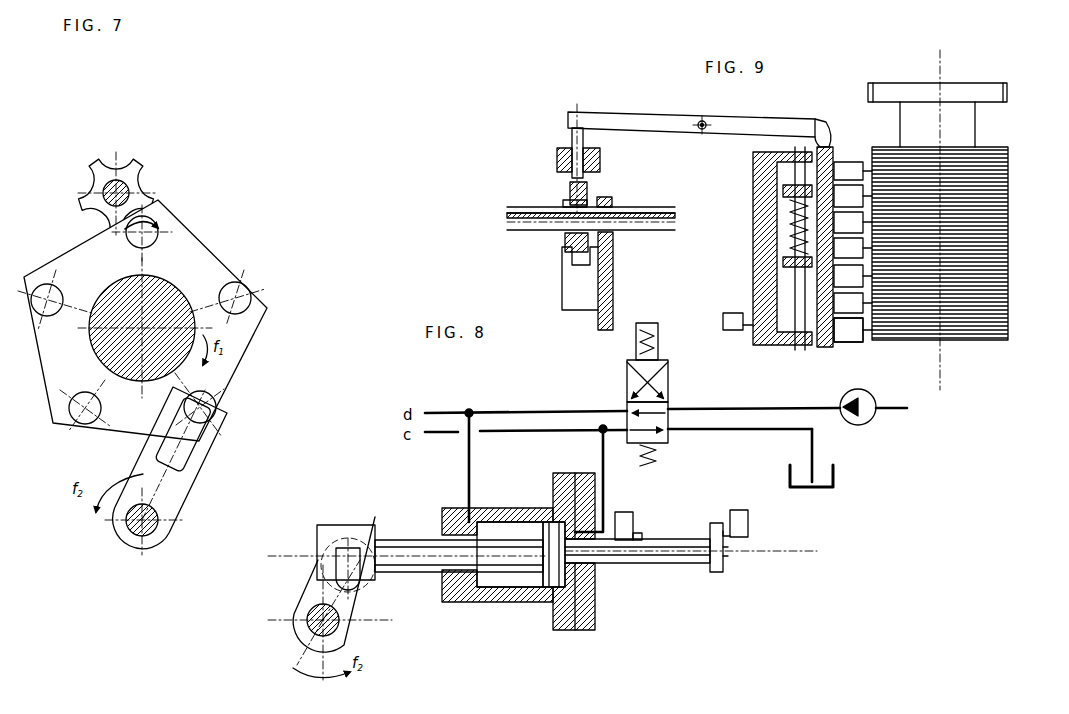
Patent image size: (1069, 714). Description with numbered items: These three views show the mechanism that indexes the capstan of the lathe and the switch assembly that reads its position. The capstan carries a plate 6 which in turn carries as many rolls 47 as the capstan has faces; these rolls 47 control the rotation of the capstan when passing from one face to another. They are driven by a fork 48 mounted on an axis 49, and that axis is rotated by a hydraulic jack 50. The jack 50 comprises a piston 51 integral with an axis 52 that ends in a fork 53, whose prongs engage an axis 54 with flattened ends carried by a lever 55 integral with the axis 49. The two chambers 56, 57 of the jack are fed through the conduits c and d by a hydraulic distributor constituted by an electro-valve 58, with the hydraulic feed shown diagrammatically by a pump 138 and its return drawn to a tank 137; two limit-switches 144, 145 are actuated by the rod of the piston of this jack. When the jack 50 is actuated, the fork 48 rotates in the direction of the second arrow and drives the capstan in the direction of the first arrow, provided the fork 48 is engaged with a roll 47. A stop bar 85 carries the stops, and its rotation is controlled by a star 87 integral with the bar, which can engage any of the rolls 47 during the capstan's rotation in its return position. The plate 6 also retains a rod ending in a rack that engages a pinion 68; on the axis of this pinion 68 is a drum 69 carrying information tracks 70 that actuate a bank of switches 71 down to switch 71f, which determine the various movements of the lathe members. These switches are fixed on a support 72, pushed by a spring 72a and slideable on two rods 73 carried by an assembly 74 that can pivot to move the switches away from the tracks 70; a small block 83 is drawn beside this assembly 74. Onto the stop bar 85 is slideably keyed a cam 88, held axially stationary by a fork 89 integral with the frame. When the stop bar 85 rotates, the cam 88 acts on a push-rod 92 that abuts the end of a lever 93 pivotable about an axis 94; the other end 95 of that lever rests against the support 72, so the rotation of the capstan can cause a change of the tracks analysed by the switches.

In FIG. 7, the plate 6 is at (192, 226).
In FIG. 7, the rolls 47 is at (156, 218).
In FIG. 7, the fork 48 is at (208, 455).
In FIG. 7, the axis 49 is at (157, 535).
In FIG. 8, the axis 49 is at (330, 632).
In FIG. 7, the stop bar 85 is at (103, 190).
In FIG. 9, the stop bar 85 is at (630, 226).
In FIG. 7, the star 87 is at (128, 160).
In FIG. 8, the hydraulic jack 50 is at (530, 590).
In FIG. 8, the piston 51 is at (558, 570).
In FIG. 8, the axis 52 is at (410, 550).
In FIG. 8, the fork 53 is at (332, 540).
In FIG. 8, the axis with flattened ends 54 is at (356, 584).
In FIG. 8, the lever 55 is at (300, 600).
In FIG. 8, the chamber 56 is at (505, 580).
In FIG. 8, the chamber 57 is at (597, 578).
In FIG. 8, the electro-valve 58 is at (668, 378).
In FIG. 8, the tank 137 is at (823, 492).
In FIG. 8, the pump 138 is at (875, 423).
In FIG. 8, the limit-switch 144 is at (750, 514).
In FIG. 8, the limit-switch 145 is at (626, 512).
In FIG. 9, the pinion 68 is at (1007, 95).
In FIG. 9, the drum 69 is at (1000, 146).
In FIG. 9, the information tracks 70 is at (1010, 235).
In FIG. 9, the switch 71 is at (863, 170).
In FIG. 9, the switch 71f is at (870, 342).
In FIG. 9, the support 72 is at (828, 348).
In FIG. 9, the spring 72a is at (790, 252).
In FIG. 9, the rods 73 is at (800, 347).
In FIG. 9, the assembly 74 is at (764, 200).
In FIG. 9, the stop block 83 is at (730, 313).
In FIG. 9, the cam 88 is at (565, 238).
In FIG. 9, the fork 89 is at (570, 280).
In FIG. 9, the push-rod 92 is at (572, 175).
In FIG. 9, the lever 93 is at (658, 122).
In FIG. 9, the axis 94 is at (694, 136).
In FIG. 9, the other end of the lever 95 is at (820, 128).